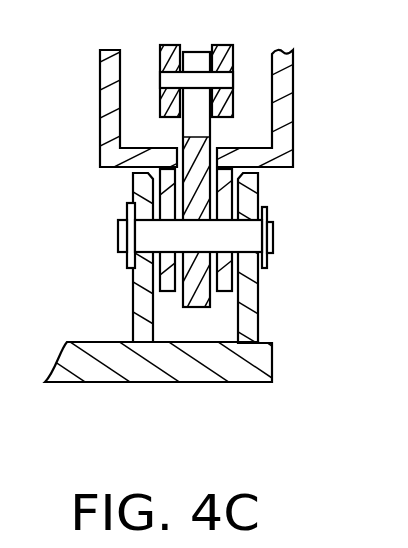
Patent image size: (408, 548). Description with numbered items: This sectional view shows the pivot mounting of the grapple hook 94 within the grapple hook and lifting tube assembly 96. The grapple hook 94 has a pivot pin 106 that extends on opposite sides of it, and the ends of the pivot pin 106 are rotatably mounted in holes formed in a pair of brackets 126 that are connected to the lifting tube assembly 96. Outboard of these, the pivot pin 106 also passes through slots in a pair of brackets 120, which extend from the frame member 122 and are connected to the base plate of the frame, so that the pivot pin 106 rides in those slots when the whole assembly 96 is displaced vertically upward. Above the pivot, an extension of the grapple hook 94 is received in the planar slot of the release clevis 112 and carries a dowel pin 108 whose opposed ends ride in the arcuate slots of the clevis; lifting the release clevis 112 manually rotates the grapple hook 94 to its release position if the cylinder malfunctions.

The grapple hook 94 is at (208, 140).
The grapple hook and lifting tube assembly 96 is at (282, 90).
The pivot pin 106 is at (142, 235).
The dowel pin 108 is at (190, 80).
The release clevis 112 is at (170, 52).
The brackets 120 is at (253, 294).
The frame member 122 is at (110, 383).
The brackets 126 is at (227, 178).